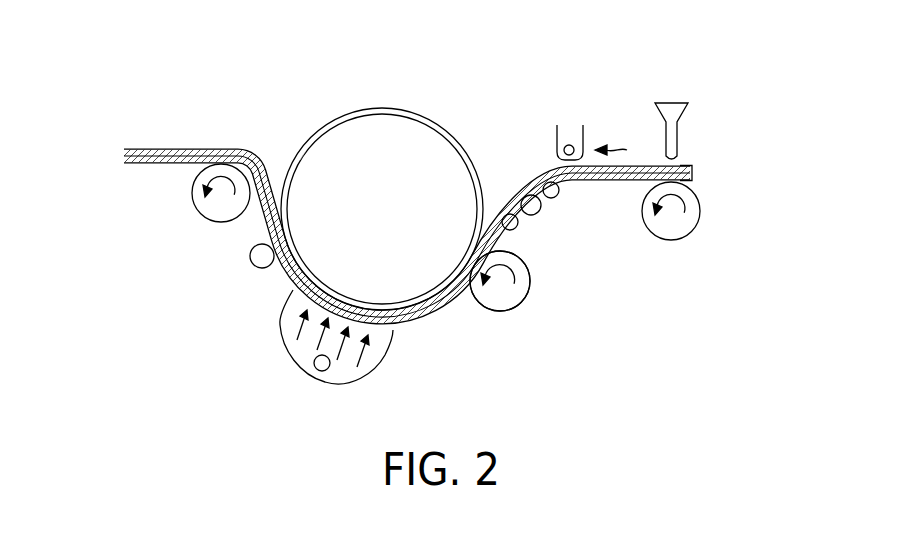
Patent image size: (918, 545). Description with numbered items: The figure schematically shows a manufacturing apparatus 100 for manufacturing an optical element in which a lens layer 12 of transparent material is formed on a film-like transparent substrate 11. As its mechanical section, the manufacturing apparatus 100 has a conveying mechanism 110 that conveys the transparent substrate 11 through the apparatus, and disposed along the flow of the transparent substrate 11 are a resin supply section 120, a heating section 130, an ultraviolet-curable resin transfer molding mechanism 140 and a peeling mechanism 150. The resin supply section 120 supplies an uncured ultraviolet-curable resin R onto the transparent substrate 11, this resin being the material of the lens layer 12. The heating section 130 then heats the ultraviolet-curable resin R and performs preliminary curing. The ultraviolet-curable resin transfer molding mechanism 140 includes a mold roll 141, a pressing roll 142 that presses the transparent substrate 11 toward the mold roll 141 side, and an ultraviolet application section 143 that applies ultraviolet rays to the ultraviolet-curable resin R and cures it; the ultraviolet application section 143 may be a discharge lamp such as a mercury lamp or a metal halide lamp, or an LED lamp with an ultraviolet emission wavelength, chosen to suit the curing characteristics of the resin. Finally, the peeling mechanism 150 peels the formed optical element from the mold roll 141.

The transparent substrate 11 is at (696, 178).
The lens layer 12 is at (690, 163).
The manufacturing apparatus 100 is at (460, 118).
The conveying mechanism 110 is at (215, 220).
The resin supply section 120 is at (688, 128).
The heating section 130 is at (572, 124).
The ultraviolet-curable resin transfer molding mechanism 140 is at (381, 107).
The mold roll 141 is at (333, 145).
The pressing roll 142 is at (502, 312).
The ultraviolet application section 143 is at (393, 355).
The peeling mechanism 150 is at (258, 260).
The ultraviolet-curable resin R is at (645, 165).